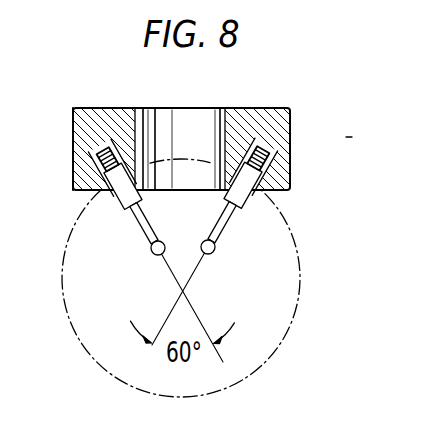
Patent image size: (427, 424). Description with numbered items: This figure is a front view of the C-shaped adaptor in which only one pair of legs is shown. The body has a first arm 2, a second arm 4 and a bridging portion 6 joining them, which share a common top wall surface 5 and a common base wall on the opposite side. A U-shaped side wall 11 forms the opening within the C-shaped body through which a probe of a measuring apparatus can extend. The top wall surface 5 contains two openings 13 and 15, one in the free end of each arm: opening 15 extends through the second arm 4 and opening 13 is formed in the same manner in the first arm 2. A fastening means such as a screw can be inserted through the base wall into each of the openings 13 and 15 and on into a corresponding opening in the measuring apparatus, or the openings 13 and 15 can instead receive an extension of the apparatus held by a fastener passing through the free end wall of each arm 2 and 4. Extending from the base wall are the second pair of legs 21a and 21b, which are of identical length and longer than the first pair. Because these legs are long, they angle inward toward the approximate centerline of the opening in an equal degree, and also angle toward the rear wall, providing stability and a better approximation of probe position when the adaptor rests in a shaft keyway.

The first arm 2 is at (280, 151).
The second arm 4 is at (75, 148).
The top wall surface 5 is at (272, 108).
The bridging portion 6 is at (205, 108).
The U-shaped side wall 11 is at (153, 108).
The opening 13 is at (255, 107).
The opening 15 is at (113, 107).
The second pair of legs 21a is at (222, 228).
The second pair of legs 21b is at (138, 235).